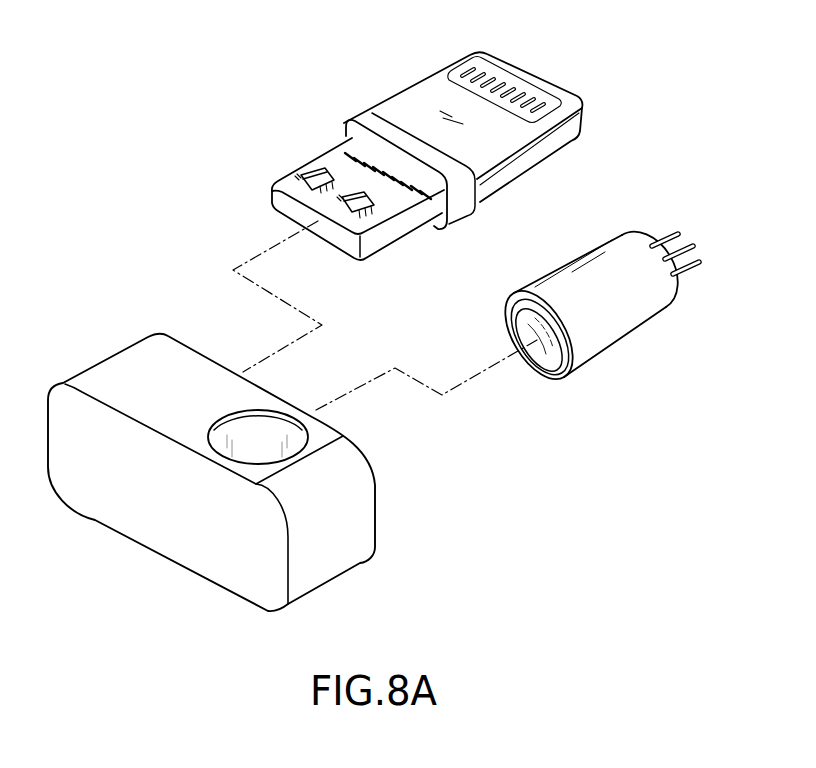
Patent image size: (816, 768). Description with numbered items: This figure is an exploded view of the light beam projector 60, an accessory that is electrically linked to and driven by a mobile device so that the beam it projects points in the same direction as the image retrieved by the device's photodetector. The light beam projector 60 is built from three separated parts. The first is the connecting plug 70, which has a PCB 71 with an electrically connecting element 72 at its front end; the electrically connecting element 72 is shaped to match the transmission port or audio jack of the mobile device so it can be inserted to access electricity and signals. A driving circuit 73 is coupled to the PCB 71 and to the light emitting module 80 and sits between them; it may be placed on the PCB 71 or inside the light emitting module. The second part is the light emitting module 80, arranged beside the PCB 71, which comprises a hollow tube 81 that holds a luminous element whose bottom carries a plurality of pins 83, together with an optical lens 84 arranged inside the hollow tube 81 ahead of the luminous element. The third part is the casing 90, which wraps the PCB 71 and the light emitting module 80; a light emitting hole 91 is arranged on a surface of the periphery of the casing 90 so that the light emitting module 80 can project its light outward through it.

The light beam projector 60 is at (50, 108).
The connecting plug 70 is at (397, 19).
The PCB 71 is at (330, 166).
The electrically connecting element 72 is at (418, 97).
The driving circuit 73 is at (365, 193).
The light emitting module 80 is at (733, 359).
The hollow tube 81 is at (615, 327).
The pins 83 is at (686, 275).
The optical lens 84 is at (548, 352).
The casing 90 is at (337, 547).
The light emitting hole 91 is at (300, 441).